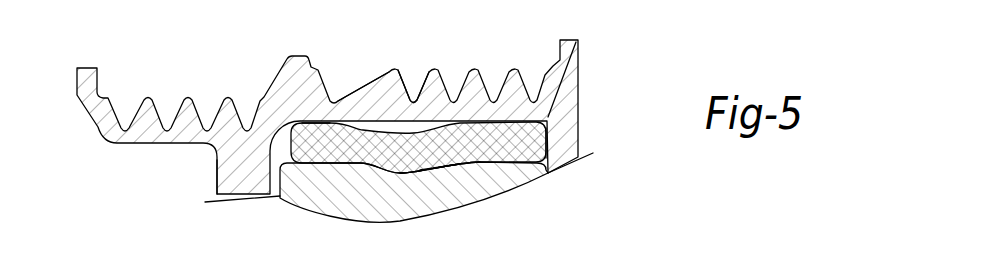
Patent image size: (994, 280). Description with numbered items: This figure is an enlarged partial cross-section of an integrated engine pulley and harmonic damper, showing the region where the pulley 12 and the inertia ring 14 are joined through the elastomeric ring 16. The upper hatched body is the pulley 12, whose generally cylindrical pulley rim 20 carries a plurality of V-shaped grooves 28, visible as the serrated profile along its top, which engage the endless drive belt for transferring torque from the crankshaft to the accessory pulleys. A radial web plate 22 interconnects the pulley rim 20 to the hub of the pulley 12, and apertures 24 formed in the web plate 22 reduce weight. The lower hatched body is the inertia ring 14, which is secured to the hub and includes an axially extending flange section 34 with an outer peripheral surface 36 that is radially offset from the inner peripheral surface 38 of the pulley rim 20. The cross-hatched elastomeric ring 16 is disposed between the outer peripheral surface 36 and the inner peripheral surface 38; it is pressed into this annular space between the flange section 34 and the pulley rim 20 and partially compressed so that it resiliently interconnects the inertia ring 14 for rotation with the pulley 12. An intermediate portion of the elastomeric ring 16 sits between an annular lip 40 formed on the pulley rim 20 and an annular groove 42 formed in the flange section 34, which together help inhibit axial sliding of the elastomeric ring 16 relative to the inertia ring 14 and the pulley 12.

The pulley 12 is at (127, 95).
The inertia ring 14 is at (502, 189).
The elastomeric ring 16 is at (553, 135).
The pulley rim 20 is at (413, 113).
The radial web plate 22 is at (217, 182).
The apertures 24 is at (232, 198).
The V-shaped grooves 28 is at (357, 77).
The flange section 34 is at (548, 173).
The outer peripheral surface 36 is at (507, 122).
The inner peripheral surface 38 is at (366, 122).
The annular lip 40 is at (415, 128).
The annular groove 42 is at (435, 160).